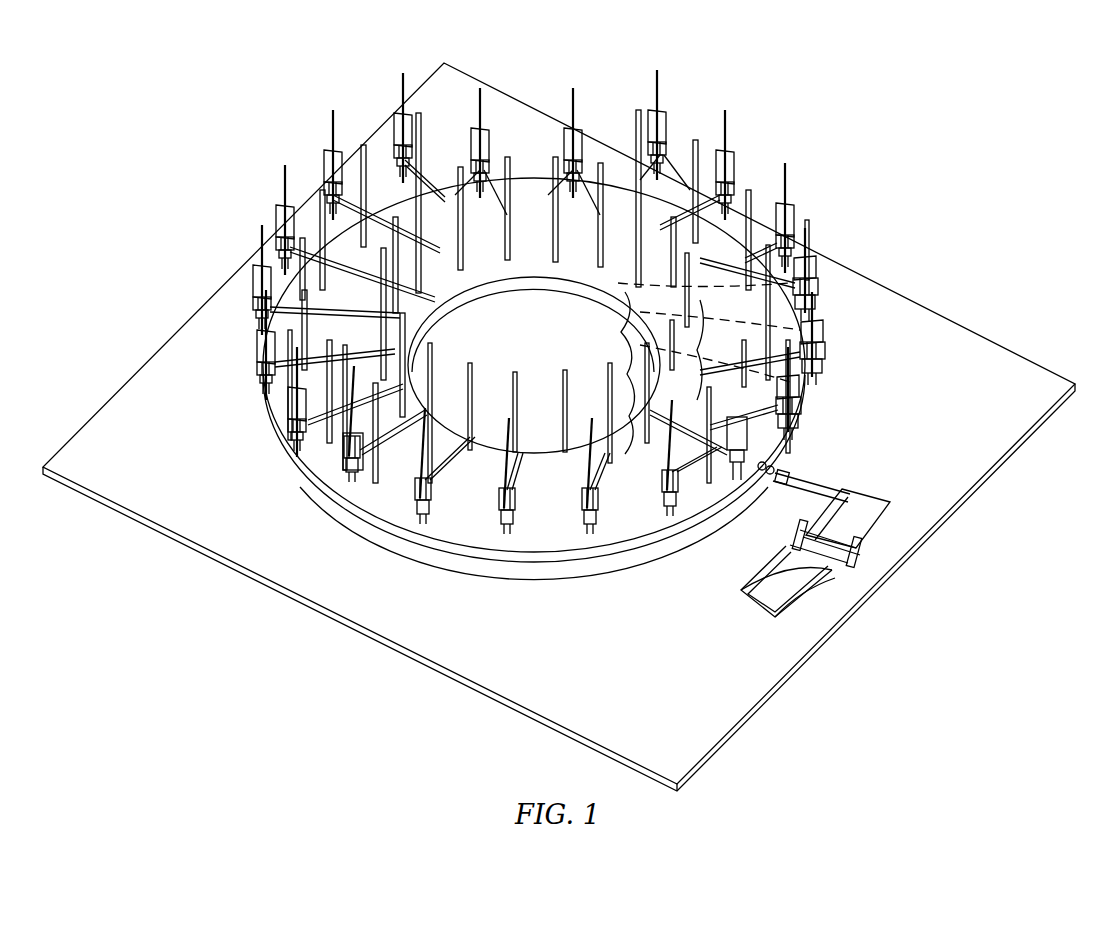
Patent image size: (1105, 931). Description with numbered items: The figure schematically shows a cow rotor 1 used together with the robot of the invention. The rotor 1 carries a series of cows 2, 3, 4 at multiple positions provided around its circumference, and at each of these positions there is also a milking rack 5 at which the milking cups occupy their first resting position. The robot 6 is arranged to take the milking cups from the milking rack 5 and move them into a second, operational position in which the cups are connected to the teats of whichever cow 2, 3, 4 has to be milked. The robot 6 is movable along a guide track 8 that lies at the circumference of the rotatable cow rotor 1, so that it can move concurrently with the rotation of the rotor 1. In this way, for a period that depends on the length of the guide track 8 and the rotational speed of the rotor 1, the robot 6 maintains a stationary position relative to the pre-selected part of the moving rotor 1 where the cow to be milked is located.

The cow rotor 1 is at (587, 171).
The cow 2 is at (630, 298).
The cow 3 is at (640, 317).
The cow 4 is at (635, 349).
The milking rack 5 is at (668, 140).
The robot 6 is at (860, 502).
The guide track 8 is at (883, 527).